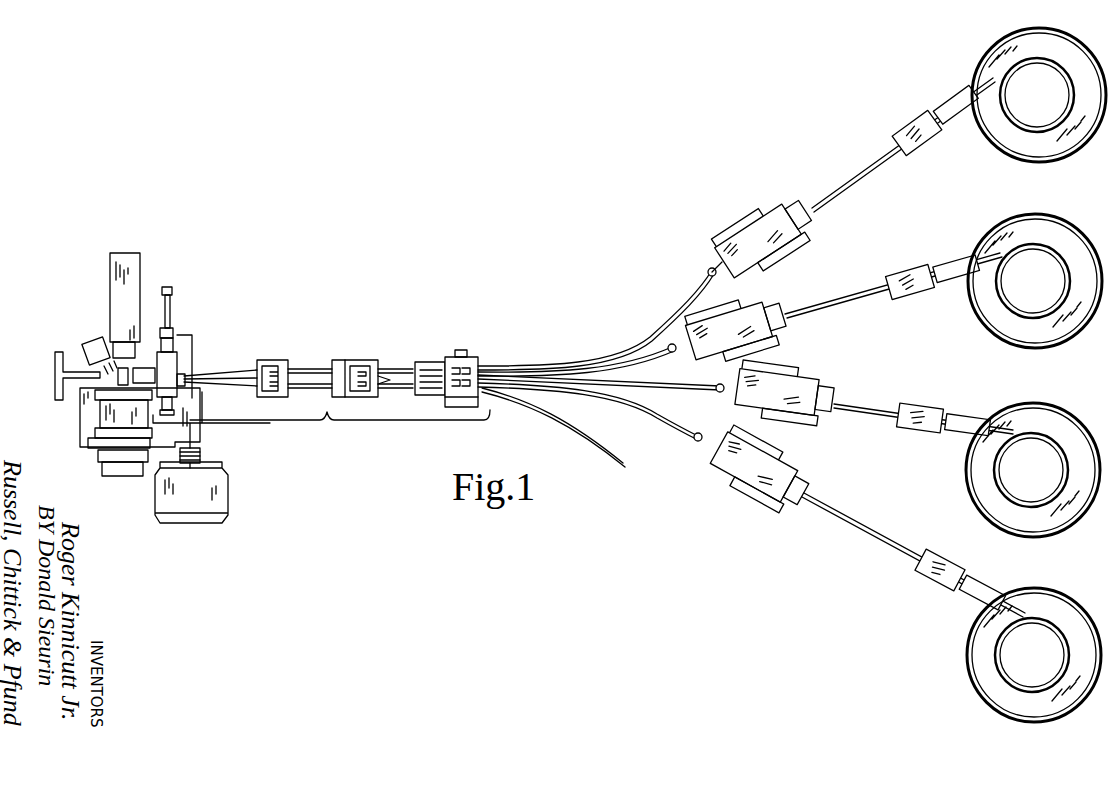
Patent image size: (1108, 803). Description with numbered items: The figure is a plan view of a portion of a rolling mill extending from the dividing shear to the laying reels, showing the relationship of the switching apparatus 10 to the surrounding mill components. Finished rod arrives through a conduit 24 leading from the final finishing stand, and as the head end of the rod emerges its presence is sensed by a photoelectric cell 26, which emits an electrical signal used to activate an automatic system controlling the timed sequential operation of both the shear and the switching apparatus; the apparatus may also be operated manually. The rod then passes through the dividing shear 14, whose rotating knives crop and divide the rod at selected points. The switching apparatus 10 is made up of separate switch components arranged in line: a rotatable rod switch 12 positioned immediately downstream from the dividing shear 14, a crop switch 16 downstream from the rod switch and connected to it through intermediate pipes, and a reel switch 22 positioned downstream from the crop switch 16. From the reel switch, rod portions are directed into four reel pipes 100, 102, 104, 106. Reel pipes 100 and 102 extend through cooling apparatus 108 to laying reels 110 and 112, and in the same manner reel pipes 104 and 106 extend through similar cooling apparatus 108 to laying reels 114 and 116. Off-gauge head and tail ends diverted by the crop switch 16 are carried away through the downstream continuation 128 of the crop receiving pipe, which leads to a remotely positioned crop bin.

The switching apparatus 10 is at (337, 406).
The rotatable rod switch 12 is at (200, 342).
The dividing shear 14 is at (93, 410).
The crop switch 16 is at (356, 350).
The reel switch 22 is at (472, 346).
The conduit 24 is at (70, 372).
The photoelectric cell 26 is at (95, 340).
The reel pipe 100 is at (502, 383).
The reel pipe 102 is at (516, 366).
The reel pipe 104 is at (636, 402).
The reel pipe 106 is at (688, 378).
The cooling apparatus 108 is at (780, 502).
The laying reel 110 is at (1005, 140).
The laying reel 112 is at (1000, 330).
The laying reel 114 is at (1000, 510).
The laying reel 116 is at (995, 695).
The downstream continuation of crop receiving pipe 128 is at (590, 425).